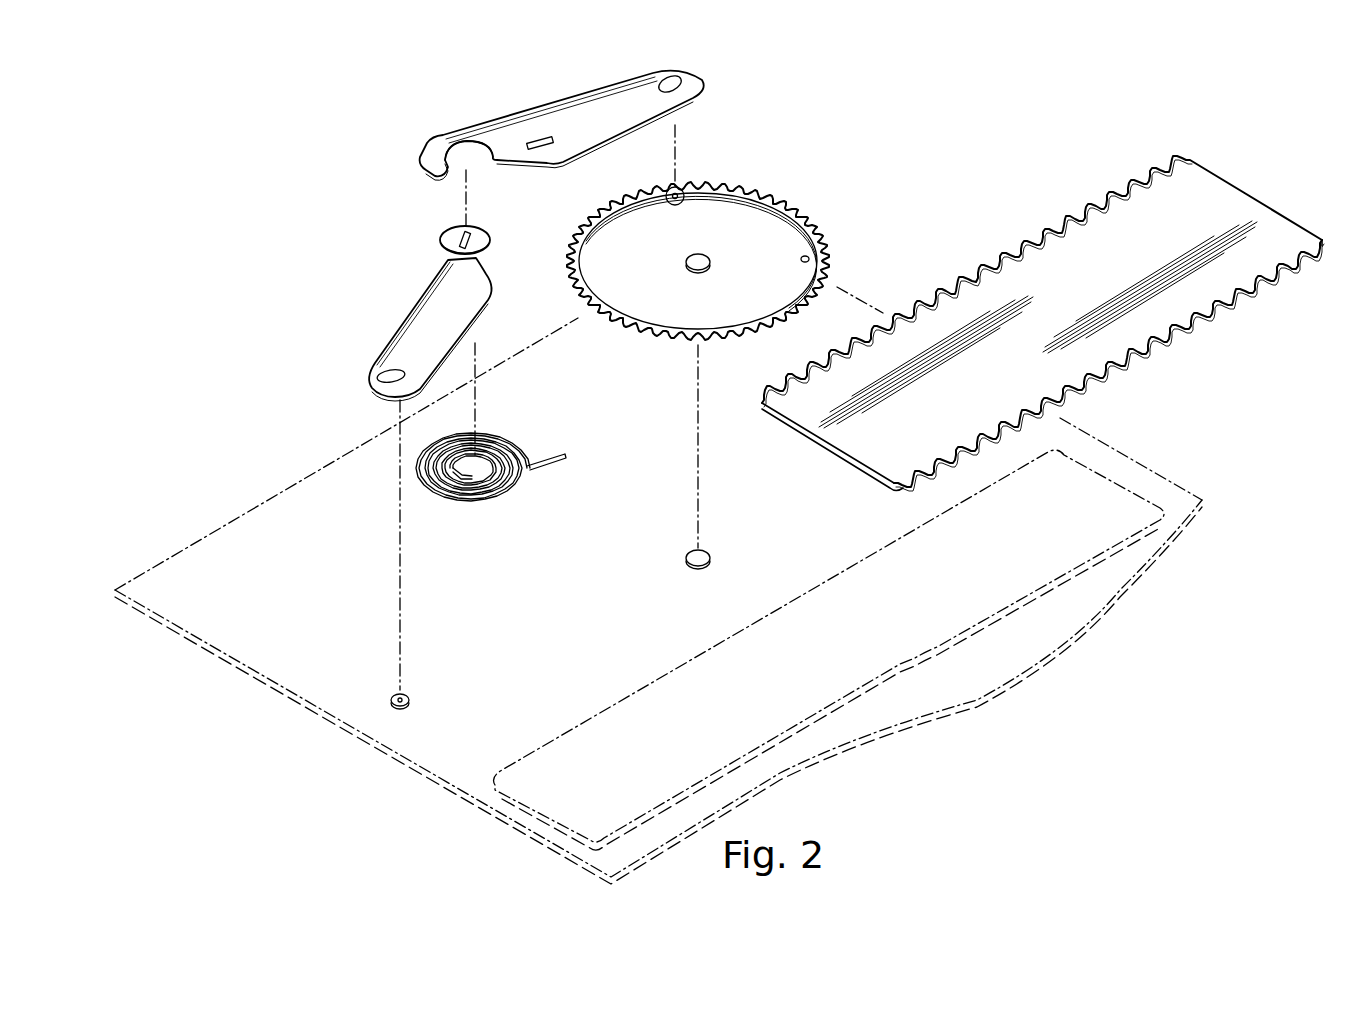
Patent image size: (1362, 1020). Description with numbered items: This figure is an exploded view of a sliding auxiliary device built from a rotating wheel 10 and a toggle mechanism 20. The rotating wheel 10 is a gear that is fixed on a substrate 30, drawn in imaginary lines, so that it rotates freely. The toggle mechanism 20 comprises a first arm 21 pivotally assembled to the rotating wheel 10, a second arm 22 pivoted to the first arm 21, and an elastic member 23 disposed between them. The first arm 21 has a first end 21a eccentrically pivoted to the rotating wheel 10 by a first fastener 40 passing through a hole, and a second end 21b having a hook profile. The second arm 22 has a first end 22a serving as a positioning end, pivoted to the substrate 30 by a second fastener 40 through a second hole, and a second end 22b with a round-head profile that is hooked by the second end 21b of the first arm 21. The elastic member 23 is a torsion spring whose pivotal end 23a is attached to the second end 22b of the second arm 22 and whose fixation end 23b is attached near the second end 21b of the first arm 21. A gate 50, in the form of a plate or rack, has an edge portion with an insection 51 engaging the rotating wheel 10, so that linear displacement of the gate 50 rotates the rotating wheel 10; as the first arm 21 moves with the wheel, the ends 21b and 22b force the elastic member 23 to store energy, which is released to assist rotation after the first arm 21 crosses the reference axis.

The rotating wheel 10 is at (787, 228).
The toggle mechanism 20 is at (355, 158).
The first arm 21 is at (589, 134).
The first end of the first arm 21a is at (700, 90).
The second end of the first arm 21b is at (436, 140).
The second arm 22 is at (386, 333).
The first end of the second arm 22a is at (390, 358).
The second end of the second arm 22b is at (440, 248).
The elastic member 23 is at (517, 484).
The pivotal end 23a is at (448, 486).
The fixation end 23b is at (556, 452).
The substrate 30 is at (300, 665).
The fastener 40 is at (684, 188).
The gate 50 is at (1043, 286).
The insection 51 is at (1135, 185).